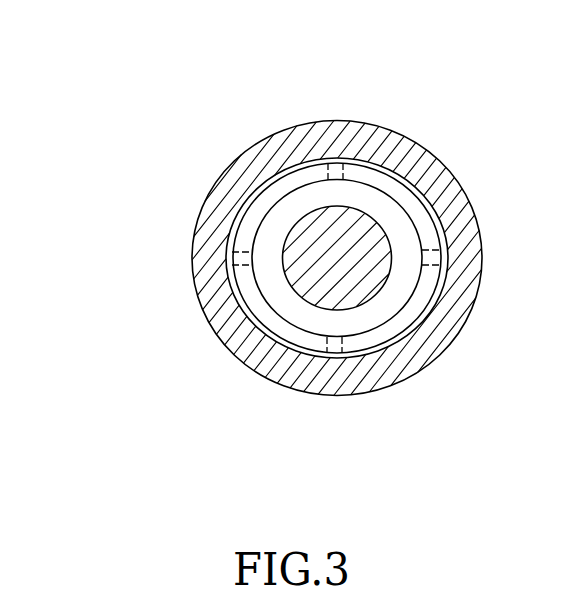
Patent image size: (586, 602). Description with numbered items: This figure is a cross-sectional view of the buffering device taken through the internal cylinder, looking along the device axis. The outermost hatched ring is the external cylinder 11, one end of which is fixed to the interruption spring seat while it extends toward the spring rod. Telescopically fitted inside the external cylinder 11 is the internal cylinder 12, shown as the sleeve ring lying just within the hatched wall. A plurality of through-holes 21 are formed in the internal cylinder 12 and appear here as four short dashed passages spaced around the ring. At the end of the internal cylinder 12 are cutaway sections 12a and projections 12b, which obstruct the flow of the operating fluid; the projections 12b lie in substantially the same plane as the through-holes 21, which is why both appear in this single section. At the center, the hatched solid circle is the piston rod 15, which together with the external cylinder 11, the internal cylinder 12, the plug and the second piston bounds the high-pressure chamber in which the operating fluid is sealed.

The external cylinder 11 is at (238, 352).
The internal cylinder 12 is at (272, 192).
The cutaway sections 12a is at (250, 195).
The projections 12b is at (230, 277).
The piston rod 15 is at (297, 248).
The through-holes 21 is at (333, 163).